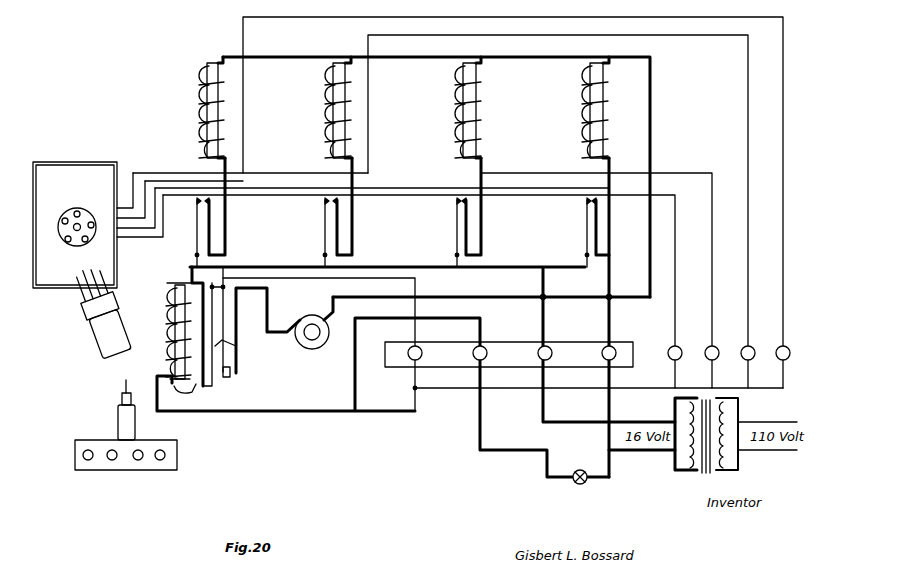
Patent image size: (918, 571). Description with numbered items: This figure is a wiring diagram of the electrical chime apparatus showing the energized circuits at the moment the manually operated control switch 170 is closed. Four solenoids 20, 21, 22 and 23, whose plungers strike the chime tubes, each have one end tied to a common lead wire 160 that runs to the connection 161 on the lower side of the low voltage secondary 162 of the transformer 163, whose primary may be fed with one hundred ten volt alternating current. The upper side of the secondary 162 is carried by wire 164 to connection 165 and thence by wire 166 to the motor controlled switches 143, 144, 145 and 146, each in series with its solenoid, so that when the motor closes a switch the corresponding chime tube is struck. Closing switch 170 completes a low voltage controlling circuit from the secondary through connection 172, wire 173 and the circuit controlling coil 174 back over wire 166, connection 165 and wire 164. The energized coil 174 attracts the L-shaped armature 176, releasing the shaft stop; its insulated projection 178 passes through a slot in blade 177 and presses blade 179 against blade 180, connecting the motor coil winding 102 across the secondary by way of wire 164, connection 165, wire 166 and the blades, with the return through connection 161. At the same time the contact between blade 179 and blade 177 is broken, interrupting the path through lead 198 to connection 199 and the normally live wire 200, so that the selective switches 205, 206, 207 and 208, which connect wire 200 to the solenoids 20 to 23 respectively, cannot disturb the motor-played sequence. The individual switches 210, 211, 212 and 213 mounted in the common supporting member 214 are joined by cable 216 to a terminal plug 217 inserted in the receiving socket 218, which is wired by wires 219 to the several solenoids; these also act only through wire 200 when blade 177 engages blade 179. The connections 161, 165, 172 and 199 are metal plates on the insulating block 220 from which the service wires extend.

The solenoid 20 is at (605, 107).
The solenoid 21 is at (477, 107).
The solenoid 22 is at (326, 107).
The solenoid 23 is at (200, 107).
The motor coil winding 102 is at (312, 349).
The motor controlled switch 143 is at (592, 240).
The motor controlled switch 144 is at (461, 240).
The motor controlled switch 145 is at (331, 240).
The motor controlled switch 146 is at (205, 240).
The lead wire 160 is at (653, 107).
The connection 161 is at (615, 348).
The low voltage secondary 162 is at (690, 464).
The transformer 163 is at (714, 462).
The wire 164 is at (545, 405).
The connection 165 is at (550, 348).
The wire 166 is at (544, 268).
The control switch 170 is at (573, 484).
The connection 172 is at (484, 347).
The wire 173 is at (330, 412).
The circuit controlling coil 174 is at (165, 297).
The armature 176 is at (195, 390).
The blade 177 is at (213, 328).
The insulated projection 178 is at (231, 357).
The blade 179 is at (228, 341).
The blade 180 is at (237, 311).
The lead 198 is at (419, 283).
The connection 199 is at (420, 348).
The normally live wire 200 is at (455, 390).
The selective switch 205 is at (678, 345).
The selective switch 206 is at (714, 345).
The selective switch 207 is at (750, 345).
The selective switch 208 is at (784, 345).
The individual switch 210 is at (86, 460).
The individual switch 211 is at (111, 460).
The individual switch 212 is at (139, 460).
The individual switch 213 is at (162, 460).
The common supporting member 214 is at (75, 460).
The cable 216 is at (112, 356).
The terminal plug 217 is at (86, 306).
The receiving socket 218 is at (92, 186).
The wires 219 is at (172, 192).
The insulating block 220 is at (633, 358).